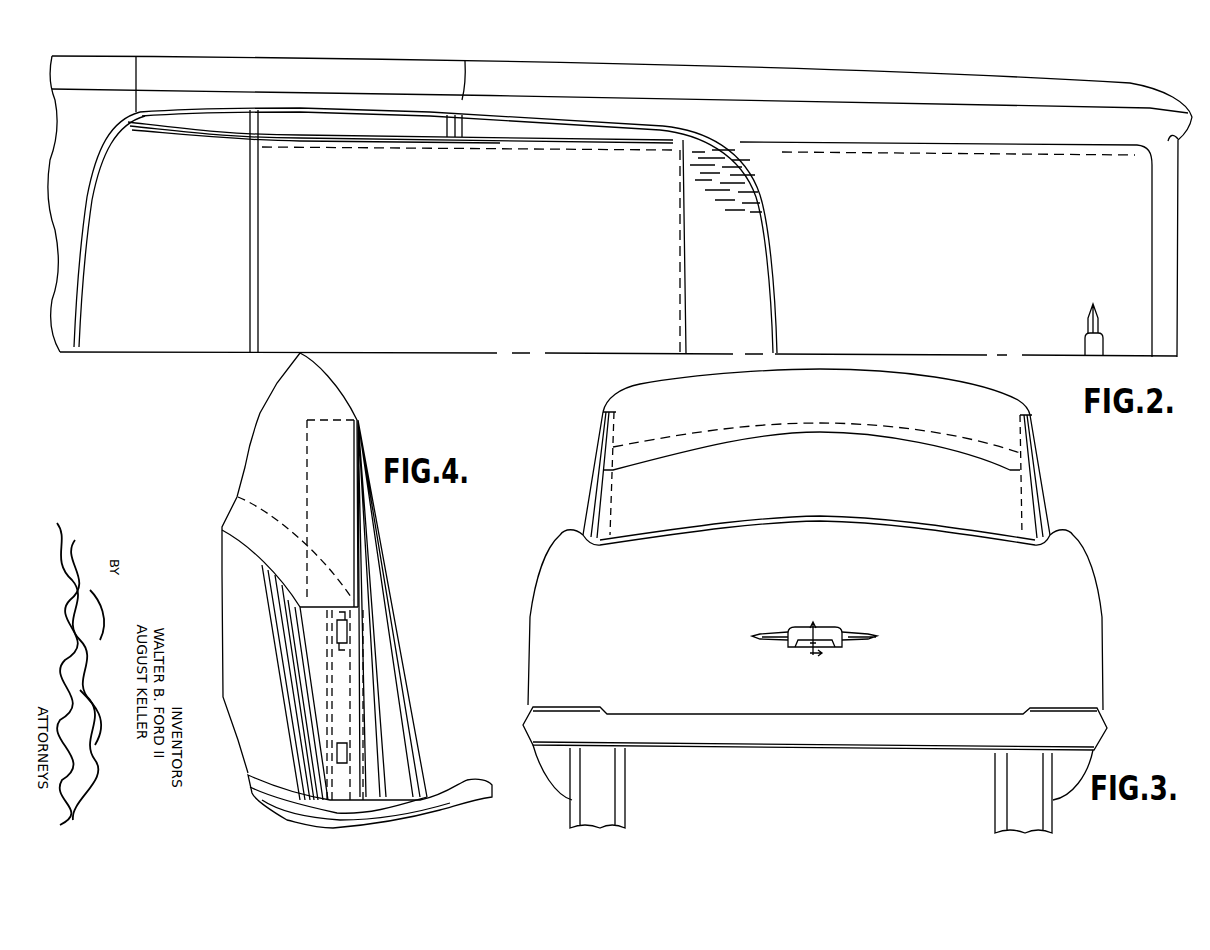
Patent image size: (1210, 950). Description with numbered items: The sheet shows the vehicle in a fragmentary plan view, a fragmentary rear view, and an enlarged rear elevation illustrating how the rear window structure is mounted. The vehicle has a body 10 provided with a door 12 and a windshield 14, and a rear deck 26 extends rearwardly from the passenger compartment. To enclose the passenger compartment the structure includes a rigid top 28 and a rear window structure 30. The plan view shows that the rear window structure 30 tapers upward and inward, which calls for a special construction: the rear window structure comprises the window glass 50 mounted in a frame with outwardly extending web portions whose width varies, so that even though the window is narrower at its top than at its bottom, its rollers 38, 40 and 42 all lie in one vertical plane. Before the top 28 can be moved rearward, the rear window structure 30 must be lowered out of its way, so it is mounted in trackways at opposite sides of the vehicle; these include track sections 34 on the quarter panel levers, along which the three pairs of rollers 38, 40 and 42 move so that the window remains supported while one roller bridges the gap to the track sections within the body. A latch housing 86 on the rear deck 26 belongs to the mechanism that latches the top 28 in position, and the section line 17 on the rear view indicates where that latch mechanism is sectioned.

In FIG. 2, the body 10 is at (70, 345).
In FIG. 3, the body 10 is at (533, 593).
In FIG. 4, the body 10 is at (364, 563).
In FIG. 2, the door 12 is at (622, 206).
In FIG. 2, the windshield 14 is at (206, 340).
In FIG. 3, the section line 17 is at (809, 639).
In FIG. 2, the rear deck 26 is at (965, 271).
In FIG. 3, the rear deck 26 is at (909, 592).
In FIG. 4, the rear deck 26 is at (267, 807).
In FIG. 2, the top 28 is at (436, 265).
In FIG. 3, the top 28 is at (710, 412).
In FIG. 4, the top 28 is at (337, 402).
In FIG. 2, the rear window structure 30 is at (757, 291).
In FIG. 3, the rear window structure 30 is at (725, 488).
In FIG. 4, the track sections 34 is at (347, 687).
In FIG. 4, the rollers 38 is at (350, 628).
In FIG. 4, the rollers 40 is at (350, 747).
In FIG. 4, the rollers 42 is at (363, 797).
In FIG. 4, the window glass 50 is at (238, 650).
In FIG. 2, the latch housing 86 is at (1086, 344).
In FIG. 3, the latch housing 86 is at (815, 627).